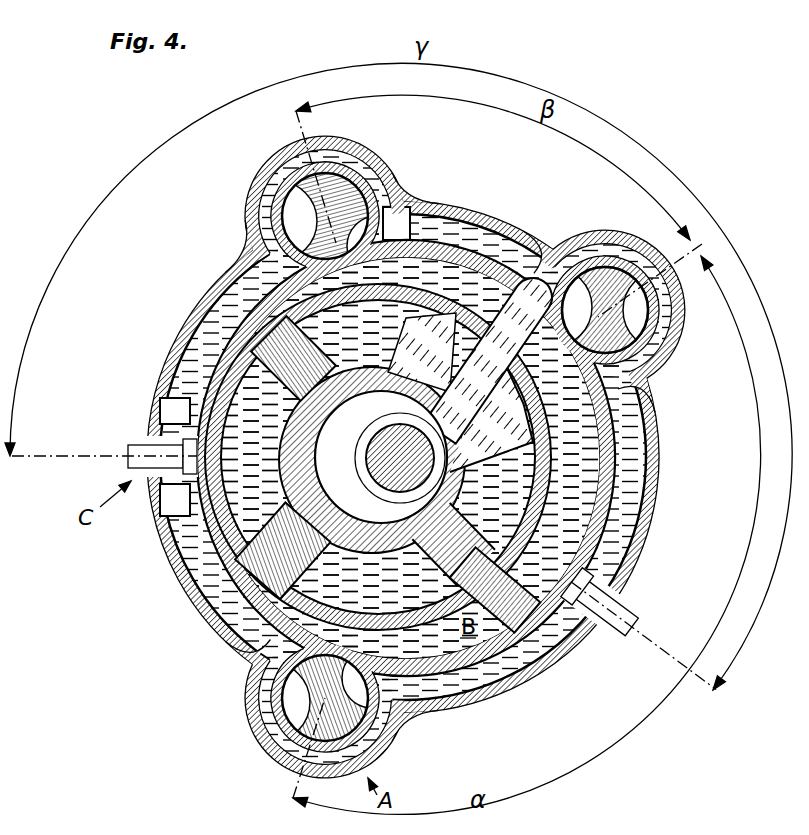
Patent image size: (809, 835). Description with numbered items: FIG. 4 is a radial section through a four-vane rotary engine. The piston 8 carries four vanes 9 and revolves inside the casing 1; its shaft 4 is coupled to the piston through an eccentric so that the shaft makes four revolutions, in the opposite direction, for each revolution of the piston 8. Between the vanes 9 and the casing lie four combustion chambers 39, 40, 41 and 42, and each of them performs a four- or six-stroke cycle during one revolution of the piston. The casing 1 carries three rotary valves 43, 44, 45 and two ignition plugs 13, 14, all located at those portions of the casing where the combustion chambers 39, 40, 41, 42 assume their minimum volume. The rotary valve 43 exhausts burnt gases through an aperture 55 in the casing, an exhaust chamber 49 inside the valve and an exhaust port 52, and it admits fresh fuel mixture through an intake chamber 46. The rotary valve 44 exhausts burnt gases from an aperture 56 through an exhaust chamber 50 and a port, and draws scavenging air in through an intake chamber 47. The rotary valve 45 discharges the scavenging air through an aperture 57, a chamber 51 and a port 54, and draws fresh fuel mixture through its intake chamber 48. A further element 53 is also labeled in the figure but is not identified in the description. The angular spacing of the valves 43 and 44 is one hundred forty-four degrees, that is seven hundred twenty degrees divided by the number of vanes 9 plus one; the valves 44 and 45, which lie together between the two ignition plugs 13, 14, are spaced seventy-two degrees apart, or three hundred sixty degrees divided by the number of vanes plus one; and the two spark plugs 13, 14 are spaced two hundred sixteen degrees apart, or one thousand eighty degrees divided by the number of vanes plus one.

The casing 1 is at (233, 333).
The shaft 4 is at (372, 462).
The piston 8 is at (237, 519).
The vanes 9 is at (511, 594).
The ignition plug 13 is at (138, 450).
The ignition plug 14 is at (621, 618).
The combustion chamber 39 is at (228, 560).
The combustion chamber 40 is at (442, 656).
The combustion chamber 41 is at (582, 498).
The combustion chamber 42 is at (449, 302).
The rotary valve 43 is at (390, 748).
The rotary valve 44 is at (615, 288).
The rotary valve 45 is at (348, 208).
The intake chamber 46 is at (410, 720).
The intake chamber 47 is at (655, 310).
The intake chamber 48 is at (279, 174).
The exhaust chamber 49 is at (292, 740).
The exhaust chamber 50 is at (582, 298).
The chamber 51 is at (252, 221).
The exhaust port 52 is at (264, 701).
The cylinder liner 53 is at (573, 262).
The port 54 is at (400, 199).
The aperture 55 is at (353, 652).
The aperture 56 is at (600, 376).
The aperture 57 is at (352, 263).